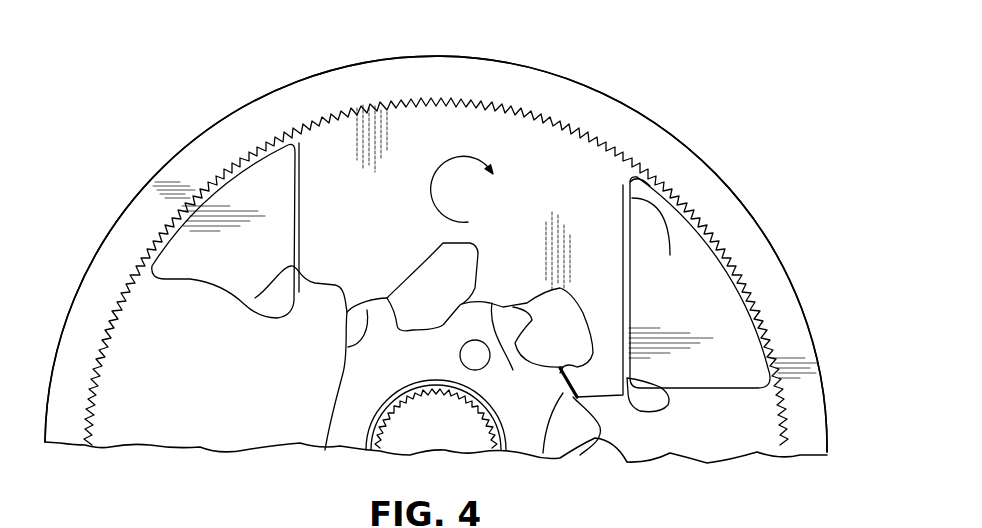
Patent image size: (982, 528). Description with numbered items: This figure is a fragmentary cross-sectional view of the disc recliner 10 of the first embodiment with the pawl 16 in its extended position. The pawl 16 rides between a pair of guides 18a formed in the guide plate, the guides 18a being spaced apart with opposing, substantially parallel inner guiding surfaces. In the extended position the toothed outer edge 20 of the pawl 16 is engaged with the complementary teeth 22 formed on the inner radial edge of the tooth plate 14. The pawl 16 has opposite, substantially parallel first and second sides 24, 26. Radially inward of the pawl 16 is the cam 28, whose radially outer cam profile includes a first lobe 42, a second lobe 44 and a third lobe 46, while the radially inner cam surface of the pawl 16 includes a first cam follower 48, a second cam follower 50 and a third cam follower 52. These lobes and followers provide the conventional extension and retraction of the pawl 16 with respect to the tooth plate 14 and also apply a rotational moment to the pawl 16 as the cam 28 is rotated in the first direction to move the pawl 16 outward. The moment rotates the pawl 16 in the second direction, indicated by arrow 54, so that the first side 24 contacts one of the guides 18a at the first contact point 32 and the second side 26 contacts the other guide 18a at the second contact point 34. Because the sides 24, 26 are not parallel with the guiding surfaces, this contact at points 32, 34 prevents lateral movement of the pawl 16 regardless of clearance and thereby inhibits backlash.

The disc recliner 10 is at (633, 88).
The tooth plate 14 is at (330, 74).
The pawl 16 is at (593, 190).
The guides 18a is at (250, 193).
The toothed outer edge 20 is at (413, 97).
The teeth 22 is at (100, 345).
The first side 24 is at (281, 137).
The second side 26 is at (627, 378).
The cam 28 is at (330, 424).
The first contact point 32 is at (255, 298).
The second contact point 34 is at (655, 238).
The first lobe 42 is at (348, 347).
The second lobe 44 is at (513, 370).
The third lobe 46 is at (543, 428).
The first cam follower 48 is at (365, 302).
The second cam follower 50 is at (490, 299).
The third cam follower 52 is at (573, 384).
The arrow 54 is at (462, 157).